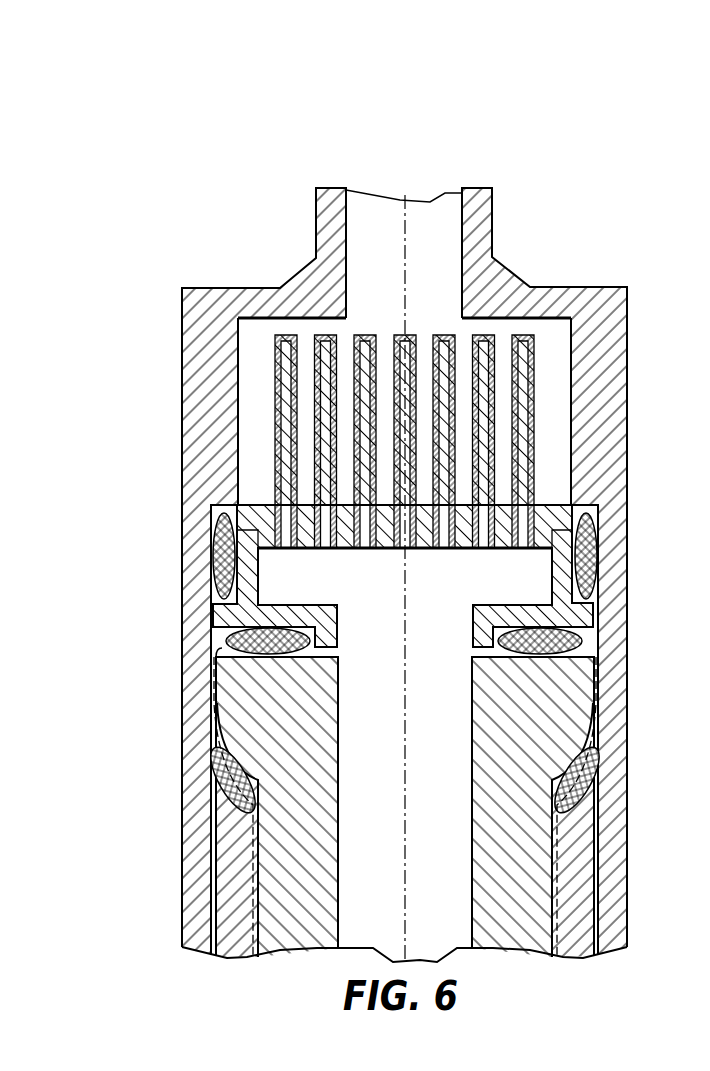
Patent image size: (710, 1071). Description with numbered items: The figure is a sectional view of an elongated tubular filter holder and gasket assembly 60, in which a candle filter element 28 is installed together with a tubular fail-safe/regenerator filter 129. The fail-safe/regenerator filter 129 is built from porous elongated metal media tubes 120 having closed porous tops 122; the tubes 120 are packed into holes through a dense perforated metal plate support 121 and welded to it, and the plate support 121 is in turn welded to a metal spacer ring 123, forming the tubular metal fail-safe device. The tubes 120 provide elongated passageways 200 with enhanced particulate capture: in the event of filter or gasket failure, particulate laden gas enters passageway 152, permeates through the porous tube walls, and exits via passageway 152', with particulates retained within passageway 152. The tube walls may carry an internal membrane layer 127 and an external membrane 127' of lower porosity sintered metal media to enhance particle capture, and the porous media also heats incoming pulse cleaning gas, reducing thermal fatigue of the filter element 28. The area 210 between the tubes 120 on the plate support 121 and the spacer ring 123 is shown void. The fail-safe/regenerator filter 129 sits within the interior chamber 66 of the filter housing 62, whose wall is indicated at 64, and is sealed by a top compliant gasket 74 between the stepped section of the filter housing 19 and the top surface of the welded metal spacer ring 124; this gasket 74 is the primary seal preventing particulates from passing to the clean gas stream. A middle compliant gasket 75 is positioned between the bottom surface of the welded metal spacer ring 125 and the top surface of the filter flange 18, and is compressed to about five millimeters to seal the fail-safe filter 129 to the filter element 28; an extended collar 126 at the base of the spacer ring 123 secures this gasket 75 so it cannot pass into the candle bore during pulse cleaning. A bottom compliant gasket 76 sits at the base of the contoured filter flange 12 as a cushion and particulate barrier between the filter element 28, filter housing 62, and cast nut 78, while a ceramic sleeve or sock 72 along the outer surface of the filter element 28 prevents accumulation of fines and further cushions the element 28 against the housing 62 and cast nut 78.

The filter holder and gasket assembly 60 is at (224, 224).
The filter housing 62 is at (618, 433).
The cap upper wall 64 is at (617, 310).
The interior chamber 66 is at (555, 383).
The porous elongated metal media tubes 120 is at (366, 387).
The fail-safe/regenerator filter 129 is at (254, 355).
The closed porous tops 122 is at (402, 333).
The internal membrane layer 127 is at (537, 401).
The external membrane 127' is at (507, 386).
The passageway 152 is at (496, 461).
The passageway 152' is at (435, 401).
The metal plate support 121 is at (260, 500).
The metal spacer ring 123 is at (262, 580).
The elongated passageways 200 is at (328, 548).
The area 210 is at (432, 588).
The extended collar 126 is at (340, 623).
The stepped section of the filter housing 19 is at (213, 521).
The top compliant gasket 74 is at (593, 543).
The middle compliant gasket 75 is at (573, 637).
The bottom compliant gasket 76 is at (583, 765).
The top surface of the welded metal spacer ring 124 is at (213, 598).
The bottom surface of the welded metal spacer ring 125 is at (213, 642).
The contoured filter flange 12 is at (237, 713).
The filter element 28 is at (280, 900).
The cast nut 78 is at (227, 843).
The ceramic sleeve or sock 72 is at (595, 727).
The filter flange 18 is at (218, 650).